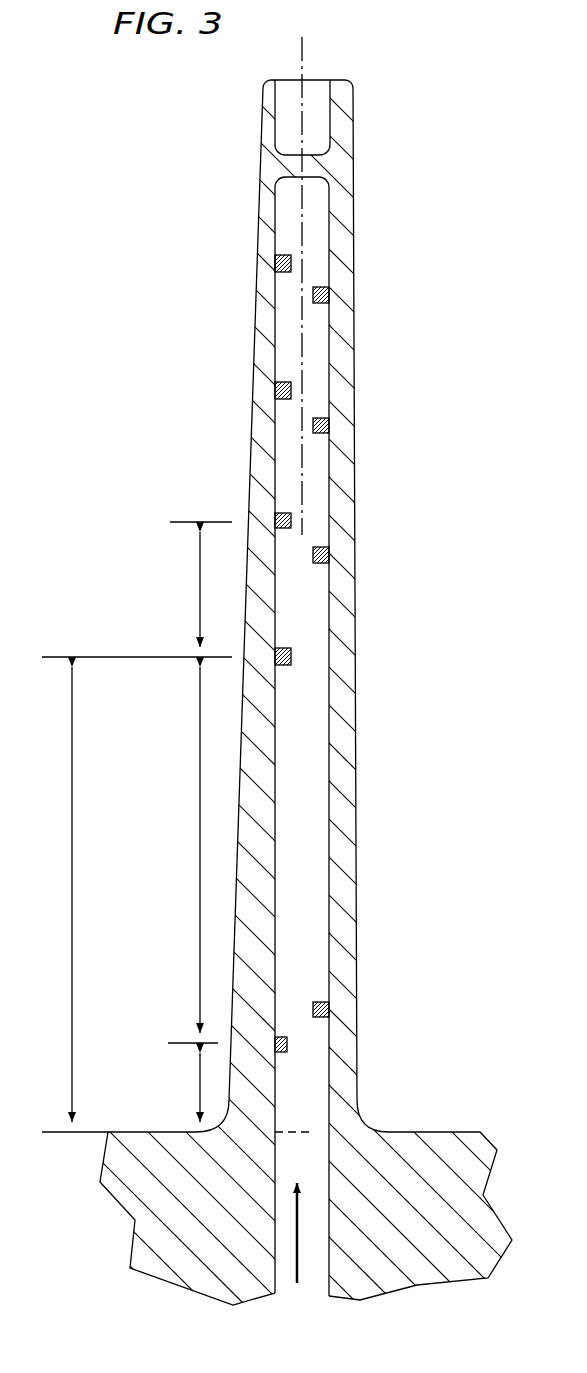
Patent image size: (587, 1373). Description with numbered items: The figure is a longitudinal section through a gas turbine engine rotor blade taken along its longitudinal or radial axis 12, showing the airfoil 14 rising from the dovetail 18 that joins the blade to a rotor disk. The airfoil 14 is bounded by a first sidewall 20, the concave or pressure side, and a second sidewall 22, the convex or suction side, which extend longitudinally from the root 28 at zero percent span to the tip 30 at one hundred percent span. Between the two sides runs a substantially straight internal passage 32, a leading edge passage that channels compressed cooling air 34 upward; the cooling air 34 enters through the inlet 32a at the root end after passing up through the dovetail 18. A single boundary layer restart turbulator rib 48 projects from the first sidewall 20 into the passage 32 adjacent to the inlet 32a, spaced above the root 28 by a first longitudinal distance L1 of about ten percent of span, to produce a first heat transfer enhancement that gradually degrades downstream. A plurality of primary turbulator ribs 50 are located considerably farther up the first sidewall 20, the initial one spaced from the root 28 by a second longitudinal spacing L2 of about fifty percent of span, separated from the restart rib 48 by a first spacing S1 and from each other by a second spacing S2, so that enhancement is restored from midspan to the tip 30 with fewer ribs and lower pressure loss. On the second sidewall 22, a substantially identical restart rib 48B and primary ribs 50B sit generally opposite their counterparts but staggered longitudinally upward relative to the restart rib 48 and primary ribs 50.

The longitudinal axis 12 is at (304, 57).
The airfoil 14 is at (362, 714).
The dovetail 18 is at (131, 1257).
The first sidewall 20 is at (254, 333).
The second sidewall 22 is at (357, 335).
The root 28 is at (410, 1132).
The tip 30 is at (332, 80).
The internal passage 32 is at (312, 868).
The inlet 32a is at (313, 1132).
The cooling air 34 is at (297, 1284).
The boundary layer restart turbulator rib 48 is at (288, 1045).
The restart rib 48B is at (313, 1007).
The primary turbulator ribs 50 is at (276, 520).
The primary ribs 50B is at (330, 427).
The first longitudinal spacing S1 is at (200, 880).
The second longitudinal spacing S2 is at (200, 631).
The first longitudinal distance L1 is at (200, 1093).
The second longitudinal spacing L2 is at (72, 913).